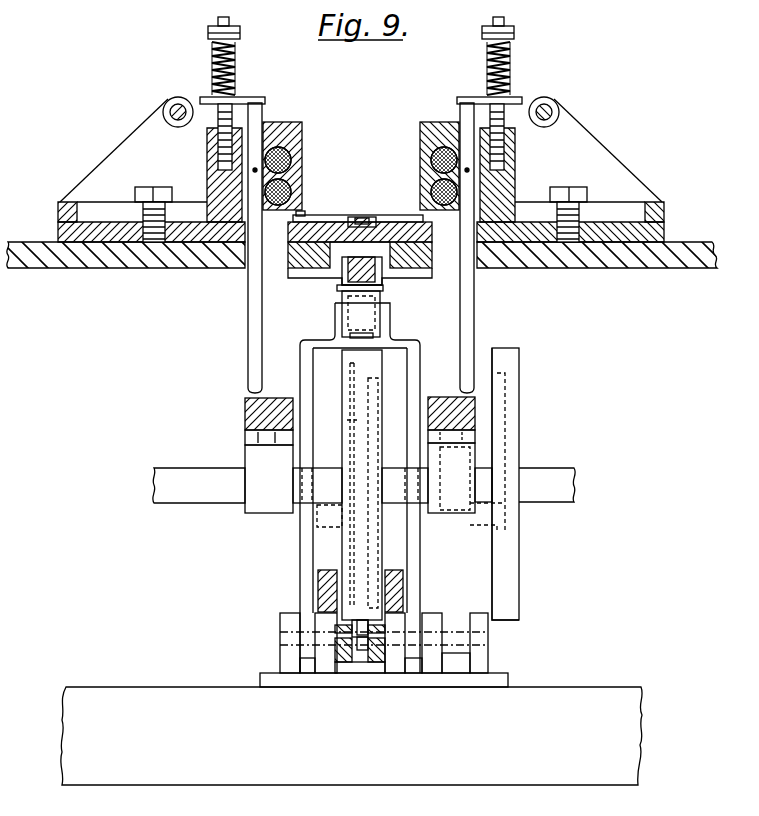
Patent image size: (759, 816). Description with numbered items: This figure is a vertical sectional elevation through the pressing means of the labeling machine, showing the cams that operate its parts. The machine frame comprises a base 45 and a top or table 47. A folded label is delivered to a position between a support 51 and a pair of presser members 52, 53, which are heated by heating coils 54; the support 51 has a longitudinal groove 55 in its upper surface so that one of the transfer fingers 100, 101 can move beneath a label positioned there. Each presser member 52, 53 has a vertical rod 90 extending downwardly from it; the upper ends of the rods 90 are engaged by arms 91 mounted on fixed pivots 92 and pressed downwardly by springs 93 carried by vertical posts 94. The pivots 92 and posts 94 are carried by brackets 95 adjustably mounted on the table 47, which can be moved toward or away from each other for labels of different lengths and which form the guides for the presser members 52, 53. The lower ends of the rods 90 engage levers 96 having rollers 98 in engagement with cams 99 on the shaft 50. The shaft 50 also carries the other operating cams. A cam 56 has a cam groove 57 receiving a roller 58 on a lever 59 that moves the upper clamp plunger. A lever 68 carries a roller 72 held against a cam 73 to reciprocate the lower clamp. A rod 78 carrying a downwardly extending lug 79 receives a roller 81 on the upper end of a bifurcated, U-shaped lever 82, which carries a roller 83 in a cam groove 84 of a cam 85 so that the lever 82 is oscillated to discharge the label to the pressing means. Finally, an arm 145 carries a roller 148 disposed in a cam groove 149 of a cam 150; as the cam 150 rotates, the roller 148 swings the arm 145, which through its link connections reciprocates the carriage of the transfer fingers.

The base 45 is at (105, 687).
The table 47 is at (36, 268).
The shaft 50 is at (168, 468).
The support 51 is at (398, 216).
The presser member 52 is at (302, 170).
The presser member 53 is at (420, 168).
The heating coils 54 is at (292, 156).
The longitudinal groove 55 is at (336, 222).
The cam 56 is at (383, 362).
The cam groove 57 is at (378, 385).
The roller 58 is at (378, 563).
The lever 59 is at (402, 590).
The lever 68 is at (376, 665).
The roller 72 is at (357, 663).
The cam 73 is at (359, 620).
The rod 78 is at (348, 272).
The downwardly extending lug 79 is at (383, 292).
The roller 81 is at (355, 315).
The lever 82 is at (300, 363).
The roller 83 is at (341, 526).
The cam groove 84 is at (350, 408).
The cam 85 is at (350, 367).
The vertical rod 90 is at (248, 313).
The arm 91 is at (254, 97).
The fixed pivot 92 is at (167, 100).
The spring 93 is at (212, 49).
The vertical post 94 is at (218, 22).
The bracket 95 is at (118, 152).
The lever 96 is at (245, 406).
The roller 98 is at (268, 437).
The cam 99 is at (258, 503).
The transfer finger 100 is at (364, 218).
The transfer finger 101 is at (358, 217).
The arm 145 is at (460, 592).
The roller 148 is at (508, 530).
The cam groove 149 is at (506, 380).
The cam 150 is at (512, 608).